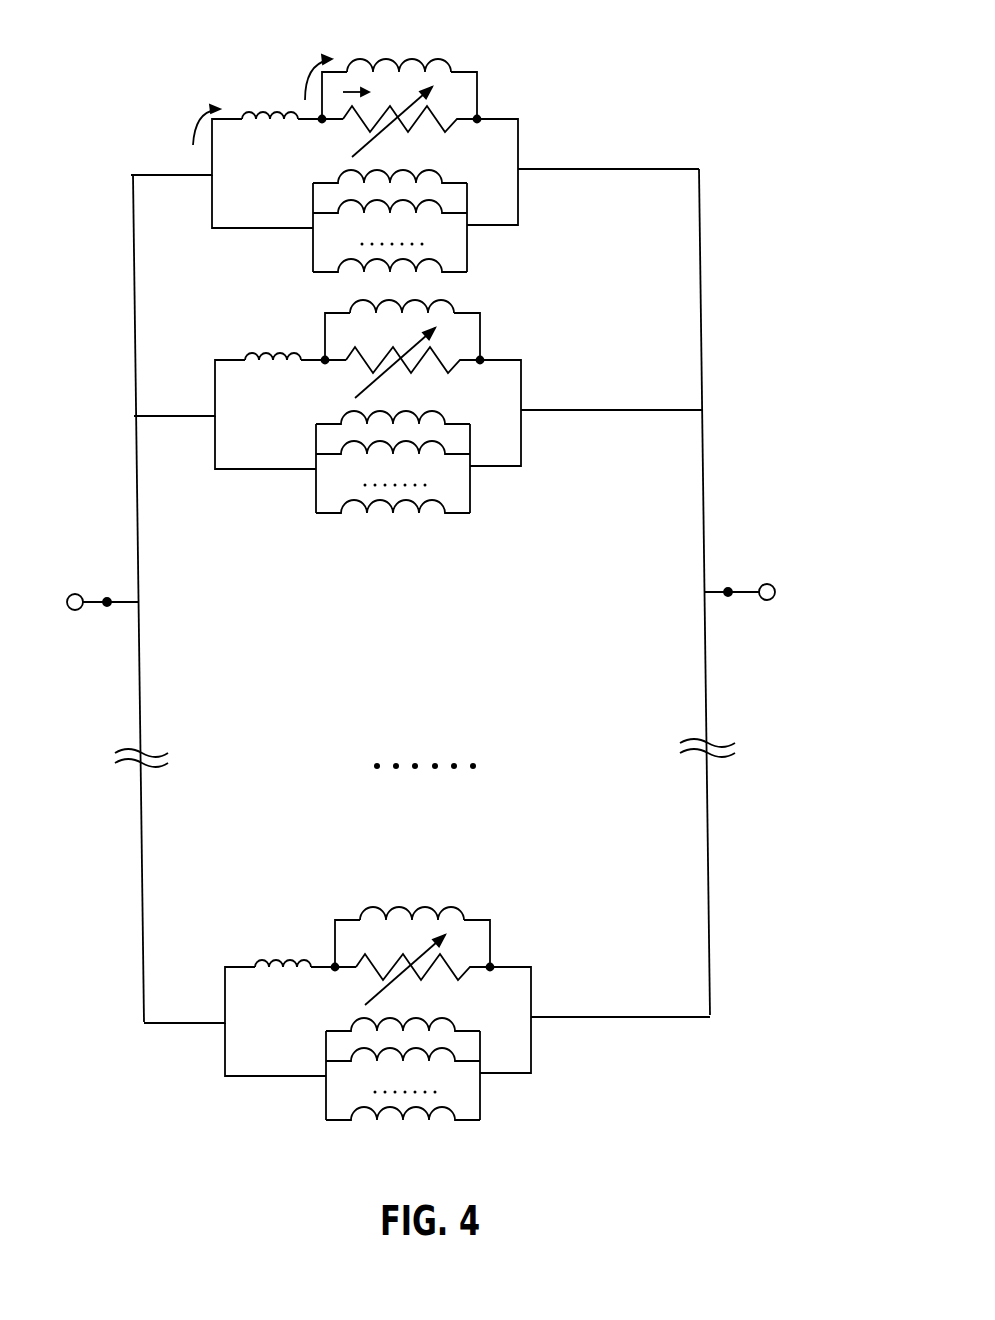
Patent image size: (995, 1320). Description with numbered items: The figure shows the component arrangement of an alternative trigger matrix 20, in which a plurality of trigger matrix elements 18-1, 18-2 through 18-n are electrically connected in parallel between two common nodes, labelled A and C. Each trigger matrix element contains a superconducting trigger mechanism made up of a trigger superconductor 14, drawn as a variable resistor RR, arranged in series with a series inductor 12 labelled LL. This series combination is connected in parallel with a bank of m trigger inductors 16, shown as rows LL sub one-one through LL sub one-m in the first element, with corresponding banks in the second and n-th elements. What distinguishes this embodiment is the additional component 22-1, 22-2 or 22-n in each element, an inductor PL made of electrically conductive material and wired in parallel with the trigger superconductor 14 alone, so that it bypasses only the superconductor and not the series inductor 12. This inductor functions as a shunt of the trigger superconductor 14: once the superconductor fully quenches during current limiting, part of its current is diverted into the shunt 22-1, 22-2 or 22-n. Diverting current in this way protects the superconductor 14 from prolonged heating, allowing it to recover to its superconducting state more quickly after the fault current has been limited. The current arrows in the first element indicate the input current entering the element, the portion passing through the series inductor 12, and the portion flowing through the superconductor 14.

The equivalent circuit network 20 is at (94, 48).
The series inductor 12 is at (243, 108).
The superconductor component 14 is at (433, 103).
The trigger inductors 16 is at (437, 163).
The trigger matrix element 18-1 is at (529, 110).
The trigger matrix element 18-2 is at (449, 394).
The trigger matrix element 18-n is at (462, 989).
The shunt inductor 22-1 is at (445, 62).
The shunt inductor 22-2 is at (454, 312).
The shunt inductor 22-n is at (418, 908).